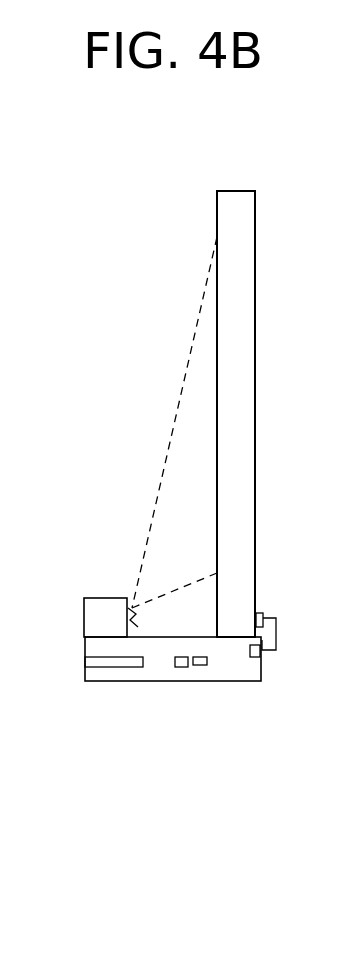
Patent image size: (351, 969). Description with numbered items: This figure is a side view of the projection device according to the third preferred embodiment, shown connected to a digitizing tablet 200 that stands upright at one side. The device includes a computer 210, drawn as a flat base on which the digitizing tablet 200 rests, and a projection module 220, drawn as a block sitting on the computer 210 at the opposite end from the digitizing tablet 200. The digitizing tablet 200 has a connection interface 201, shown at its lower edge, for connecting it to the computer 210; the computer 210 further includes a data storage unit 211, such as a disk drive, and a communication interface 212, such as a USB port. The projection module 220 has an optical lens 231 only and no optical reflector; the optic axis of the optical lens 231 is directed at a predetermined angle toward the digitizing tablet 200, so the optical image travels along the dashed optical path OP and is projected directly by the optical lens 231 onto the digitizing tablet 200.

The digitizing tablet 200 is at (236, 191).
The connection interface 201 is at (259, 613).
The computer 210 is at (223, 681).
The data storage unit 211 is at (85, 661).
The communication interface 212 is at (182, 668).
The projection module 220 is at (84, 620).
The optical lens 231 is at (135, 631).
The optical path OP is at (150, 525).